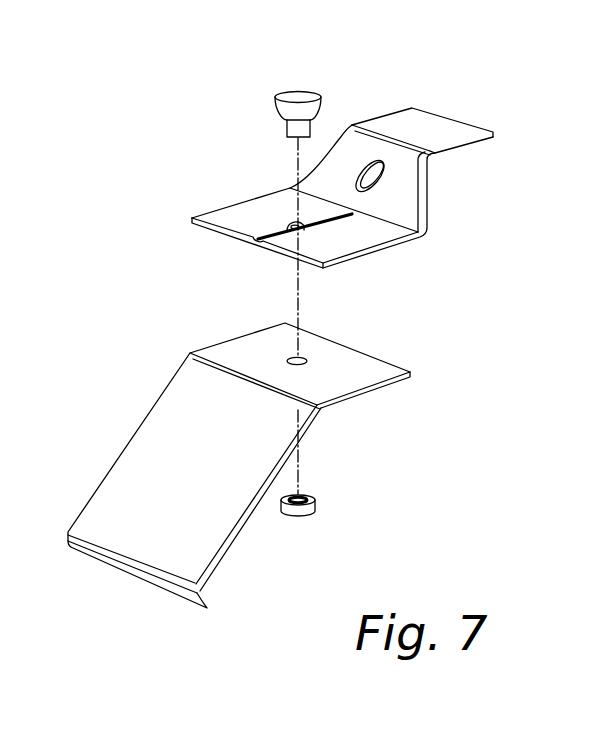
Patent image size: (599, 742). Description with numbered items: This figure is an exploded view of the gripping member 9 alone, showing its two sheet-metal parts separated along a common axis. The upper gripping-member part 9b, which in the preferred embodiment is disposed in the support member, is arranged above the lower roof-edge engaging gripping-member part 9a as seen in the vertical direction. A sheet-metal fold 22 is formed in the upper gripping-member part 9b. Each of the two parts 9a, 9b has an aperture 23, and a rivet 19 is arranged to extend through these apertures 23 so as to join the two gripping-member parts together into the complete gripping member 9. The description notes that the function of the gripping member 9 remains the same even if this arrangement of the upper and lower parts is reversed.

The rivet 19 is at (298, 95).
The gripping member 9 is at (224, 457).
The roof-edge engaging gripping-member part 9a is at (98, 487).
The gripping-member part 9b is at (427, 188).
The sheet-metal fold 22 is at (250, 247).
The apertures 23 is at (314, 228).